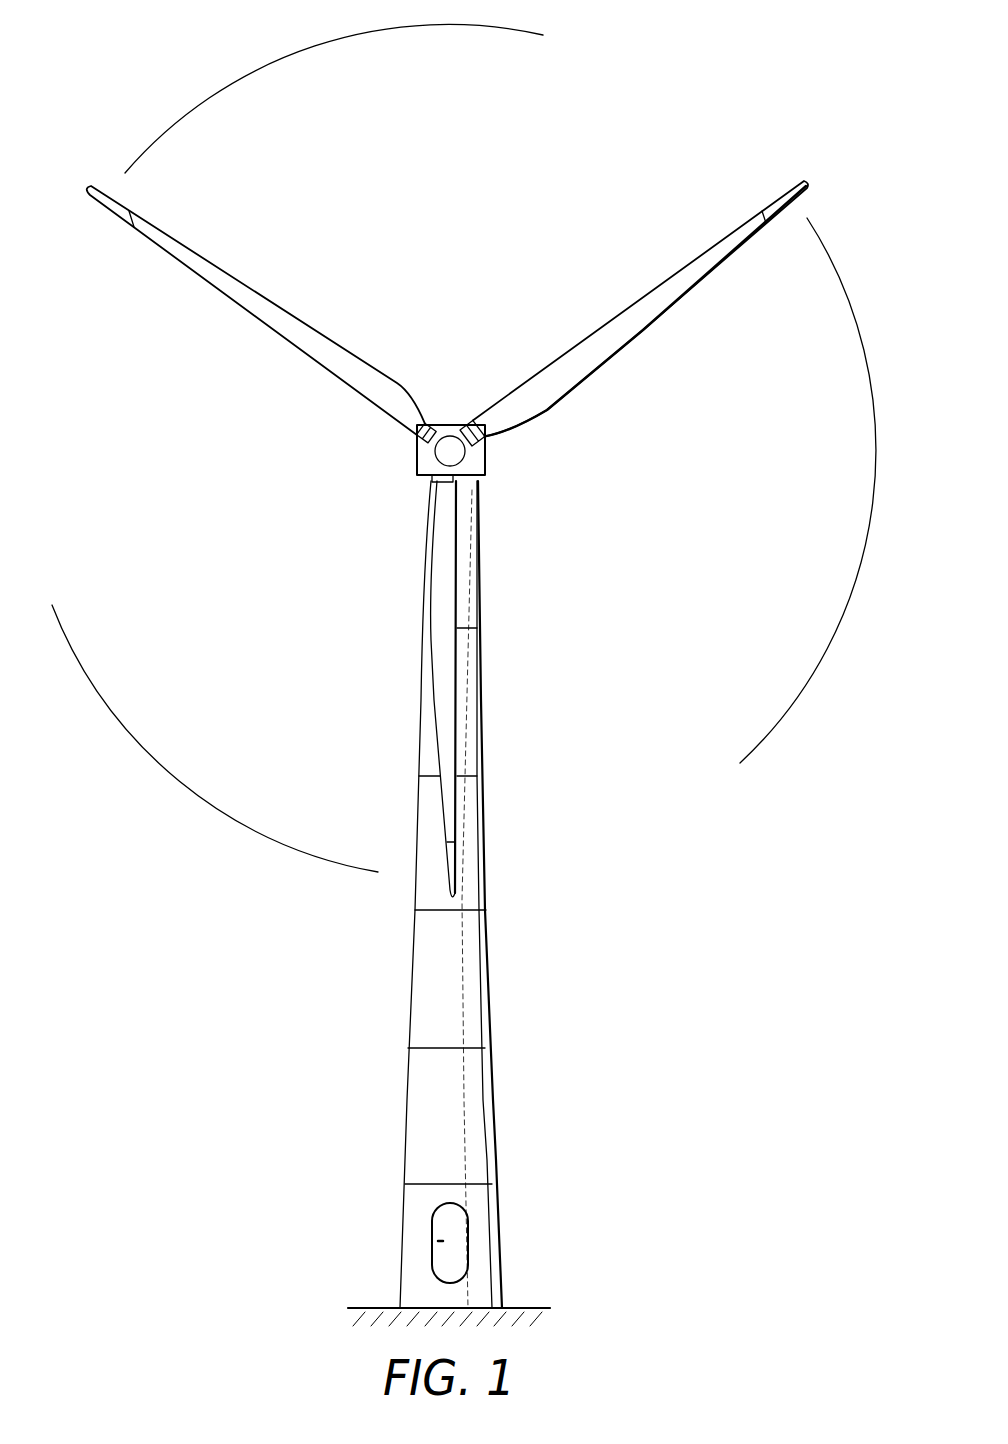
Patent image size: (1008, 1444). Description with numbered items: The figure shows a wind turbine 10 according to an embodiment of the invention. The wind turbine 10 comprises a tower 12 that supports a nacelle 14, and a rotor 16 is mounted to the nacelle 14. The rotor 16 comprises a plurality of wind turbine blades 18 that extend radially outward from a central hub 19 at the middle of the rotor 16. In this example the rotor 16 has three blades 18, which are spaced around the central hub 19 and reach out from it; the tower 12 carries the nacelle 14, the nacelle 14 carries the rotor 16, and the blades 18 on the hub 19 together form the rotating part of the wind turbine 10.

The wind turbine 10 is at (464, 675).
The tower 12 is at (424, 988).
The nacelle 14 is at (457, 454).
The rotor 16 is at (464, 460).
The wind turbine blades 18 is at (446, 641).
The central hub 19 is at (443, 452).